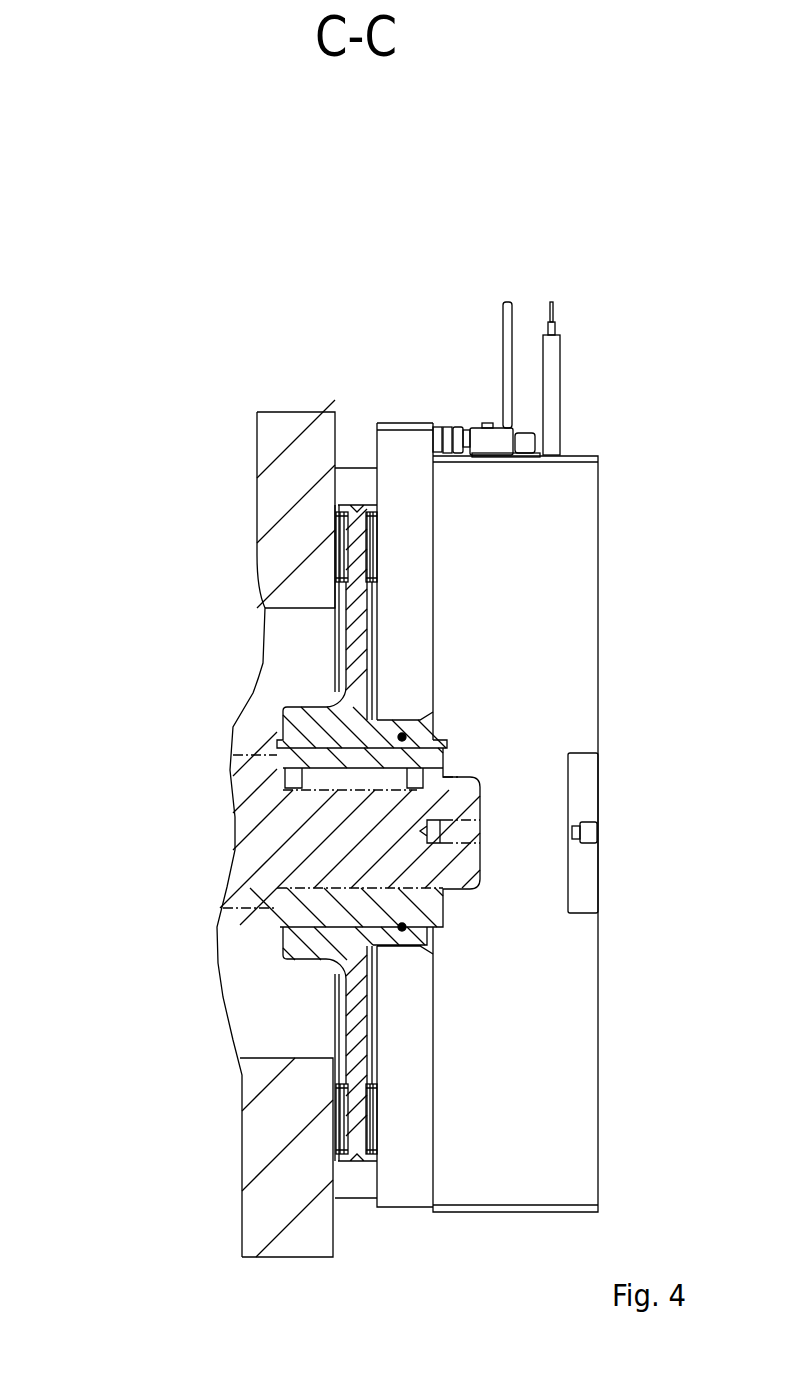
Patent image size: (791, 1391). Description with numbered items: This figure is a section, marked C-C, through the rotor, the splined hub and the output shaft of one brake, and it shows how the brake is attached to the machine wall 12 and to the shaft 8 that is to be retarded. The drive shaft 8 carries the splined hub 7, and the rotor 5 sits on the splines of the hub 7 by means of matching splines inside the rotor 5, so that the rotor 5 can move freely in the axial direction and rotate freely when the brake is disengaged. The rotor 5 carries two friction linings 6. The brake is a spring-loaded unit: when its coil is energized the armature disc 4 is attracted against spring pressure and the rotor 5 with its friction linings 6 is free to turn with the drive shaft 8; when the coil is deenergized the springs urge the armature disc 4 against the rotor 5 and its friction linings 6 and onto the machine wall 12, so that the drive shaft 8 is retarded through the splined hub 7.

The armature disc 4 is at (397, 444).
The rotor 5 is at (345, 506).
The friction linings 6 is at (372, 560).
The splined hub 7 is at (278, 750).
The drive shaft 8 is at (292, 814).
The machine wall 12 is at (308, 434).